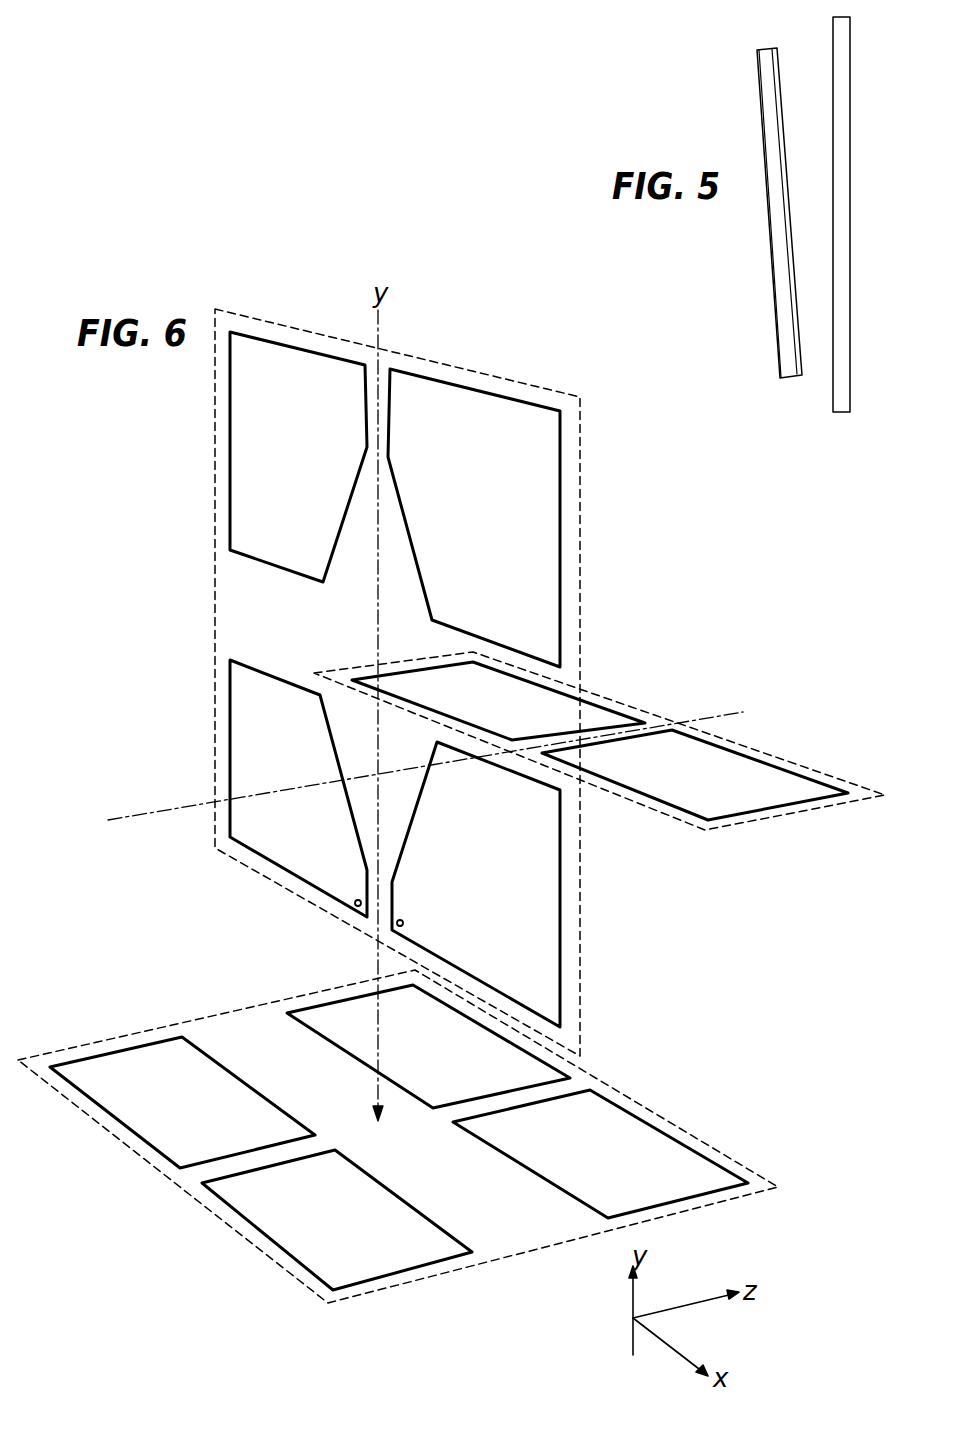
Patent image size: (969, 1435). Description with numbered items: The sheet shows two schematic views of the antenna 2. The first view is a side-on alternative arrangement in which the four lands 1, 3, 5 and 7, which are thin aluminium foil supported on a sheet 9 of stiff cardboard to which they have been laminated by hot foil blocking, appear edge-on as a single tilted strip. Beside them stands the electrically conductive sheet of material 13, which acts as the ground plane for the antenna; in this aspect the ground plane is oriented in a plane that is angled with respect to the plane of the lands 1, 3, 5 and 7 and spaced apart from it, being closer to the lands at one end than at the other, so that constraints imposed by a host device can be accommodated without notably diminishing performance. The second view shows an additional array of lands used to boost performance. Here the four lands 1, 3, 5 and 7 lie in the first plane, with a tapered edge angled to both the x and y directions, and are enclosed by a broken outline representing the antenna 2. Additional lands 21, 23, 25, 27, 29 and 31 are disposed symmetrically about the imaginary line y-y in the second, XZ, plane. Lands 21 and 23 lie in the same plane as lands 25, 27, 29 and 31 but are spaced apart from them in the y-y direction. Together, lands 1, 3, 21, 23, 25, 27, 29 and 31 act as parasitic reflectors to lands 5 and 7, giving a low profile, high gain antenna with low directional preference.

In FIG. 5, the land 1 is at (719, 197).
In FIG. 6, the land 1 is at (243, 414).
In FIG. 6, the antenna 2 is at (602, 470).
In FIG. 5, the land 3 is at (719, 197).
In FIG. 6, the land 3 is at (552, 565).
In FIG. 5, the land 5 is at (719, 197).
In FIG. 6, the land 5 is at (240, 743).
In FIG. 5, the land 7 is at (778, 58).
In FIG. 6, the land 7 is at (542, 918).
In FIG. 5, the sheet 9 is at (766, 120).
In FIG. 5, the electrically conductive sheet of material 13 is at (850, 118).
In FIG. 6, the additional land 21 is at (597, 714).
In FIG. 6, the additional land 23 is at (795, 783).
In FIG. 6, the additional land 25 is at (665, 1165).
In FIG. 6, the additional land 27 is at (327, 1013).
In FIG. 6, the additional land 29 is at (137, 1110).
In FIG. 6, the additional land 31 is at (293, 1240).